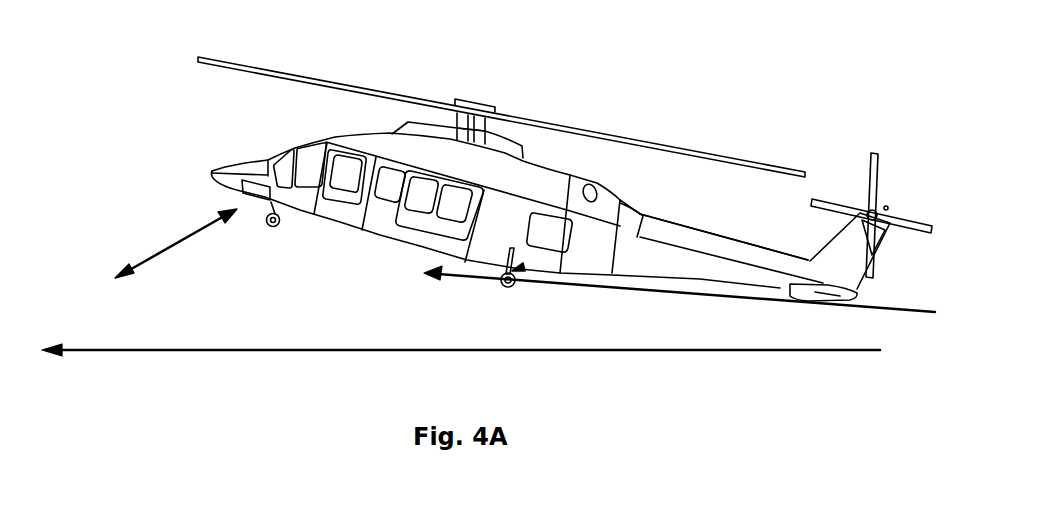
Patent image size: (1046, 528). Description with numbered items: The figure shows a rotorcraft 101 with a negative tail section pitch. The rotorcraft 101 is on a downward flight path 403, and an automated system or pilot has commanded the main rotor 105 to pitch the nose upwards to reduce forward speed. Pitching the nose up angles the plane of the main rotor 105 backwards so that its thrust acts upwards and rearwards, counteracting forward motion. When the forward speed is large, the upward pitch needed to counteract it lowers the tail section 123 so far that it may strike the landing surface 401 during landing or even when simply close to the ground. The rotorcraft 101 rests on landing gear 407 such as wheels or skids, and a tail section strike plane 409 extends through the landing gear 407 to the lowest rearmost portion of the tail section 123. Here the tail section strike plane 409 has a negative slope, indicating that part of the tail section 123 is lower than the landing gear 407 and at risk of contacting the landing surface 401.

The rotorcraft 101 is at (255, 162).
The main rotor 105 is at (606, 132).
The tail section 123 is at (747, 242).
The landing surface 401 is at (247, 352).
The downward flight path 403 is at (140, 262).
The landing gear 407 is at (503, 289).
The tail section strike plane 409 is at (440, 280).